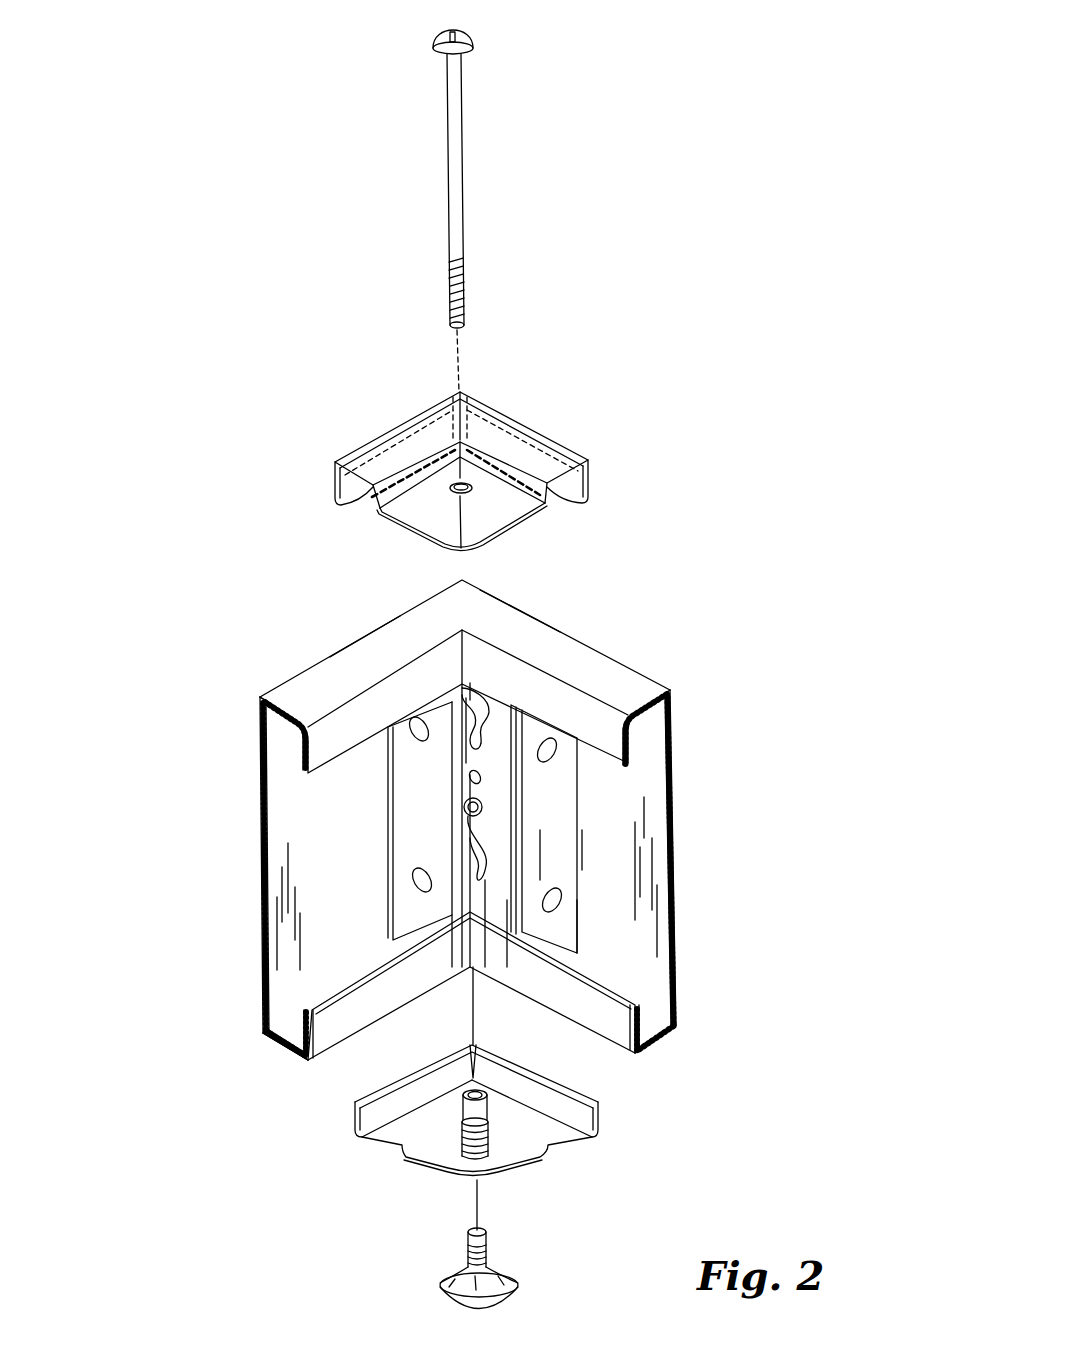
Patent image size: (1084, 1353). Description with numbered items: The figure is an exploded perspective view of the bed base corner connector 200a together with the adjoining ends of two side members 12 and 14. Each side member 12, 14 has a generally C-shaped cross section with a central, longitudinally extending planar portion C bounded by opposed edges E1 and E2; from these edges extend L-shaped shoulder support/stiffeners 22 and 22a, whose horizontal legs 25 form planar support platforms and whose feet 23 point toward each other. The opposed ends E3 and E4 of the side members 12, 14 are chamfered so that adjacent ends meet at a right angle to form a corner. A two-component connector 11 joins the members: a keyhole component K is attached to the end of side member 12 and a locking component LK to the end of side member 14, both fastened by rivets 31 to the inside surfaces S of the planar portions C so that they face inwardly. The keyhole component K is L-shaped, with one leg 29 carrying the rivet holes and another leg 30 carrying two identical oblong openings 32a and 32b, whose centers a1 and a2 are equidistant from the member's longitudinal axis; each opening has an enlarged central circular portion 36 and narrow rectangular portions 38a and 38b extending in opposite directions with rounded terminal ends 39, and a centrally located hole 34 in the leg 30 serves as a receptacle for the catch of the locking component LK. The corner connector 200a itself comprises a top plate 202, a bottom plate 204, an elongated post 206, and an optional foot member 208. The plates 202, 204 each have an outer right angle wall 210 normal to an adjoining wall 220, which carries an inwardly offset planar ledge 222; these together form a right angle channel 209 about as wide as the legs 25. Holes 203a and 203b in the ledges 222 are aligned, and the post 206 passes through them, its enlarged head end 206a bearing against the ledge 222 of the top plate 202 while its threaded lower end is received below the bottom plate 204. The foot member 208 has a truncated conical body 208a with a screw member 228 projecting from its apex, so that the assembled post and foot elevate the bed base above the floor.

The elongated post 206 is at (468, 165).
The enlarged head end 206a is at (472, 42).
The top plate 202 is at (565, 437).
The adjoining wall 220 is at (478, 472).
The outer right angle wall 210 is at (343, 489).
The right angle channel 209 is at (568, 486).
The planar ledge 222 is at (420, 510).
The hole 203a is at (474, 489).
The corner connector 200a is at (314, 637).
The L-shaped shoulder support/stiffener 22 is at (318, 662).
The leg 25 is at (370, 632).
The foot 23 is at (630, 758).
The leg 30 is at (500, 690).
The enlarged central circular portion 36 is at (615, 655).
The edge E1 is at (275, 682).
The edge E2 is at (290, 1030).
The end E3 is at (410, 622).
The end E4 is at (500, 607).
The keyhole component K is at (416, 760).
The oblong-type opening 32a is at (392, 757).
The planar portion C is at (380, 868).
The side member 12 is at (277, 870).
The rounded outer terminal end 39 is at (462, 905).
The center a1 is at (458, 688).
The leg 29 is at (466, 812).
The center a2 is at (465, 872).
The oblong-type opening 32b is at (480, 872).
The narrow rectangular portion 38b is at (506, 872).
The inside surface S is at (572, 763).
The centrally located hole 34 is at (556, 878).
The locking component LK is at (545, 803).
The side member 14 is at (658, 795).
The two-component connector 11 is at (585, 846).
The narrow rectangular portion 38a is at (560, 905).
The rivet 31 is at (580, 948).
The L-shaped shoulder support/stiffener 22a is at (300, 1062).
The bottom plate 204 is at (418, 1157).
The hole 203b is at (453, 1157).
The screw member 228 is at (489, 1246).
The foot member 208 is at (518, 1292).
The body 208a is at (475, 1297).